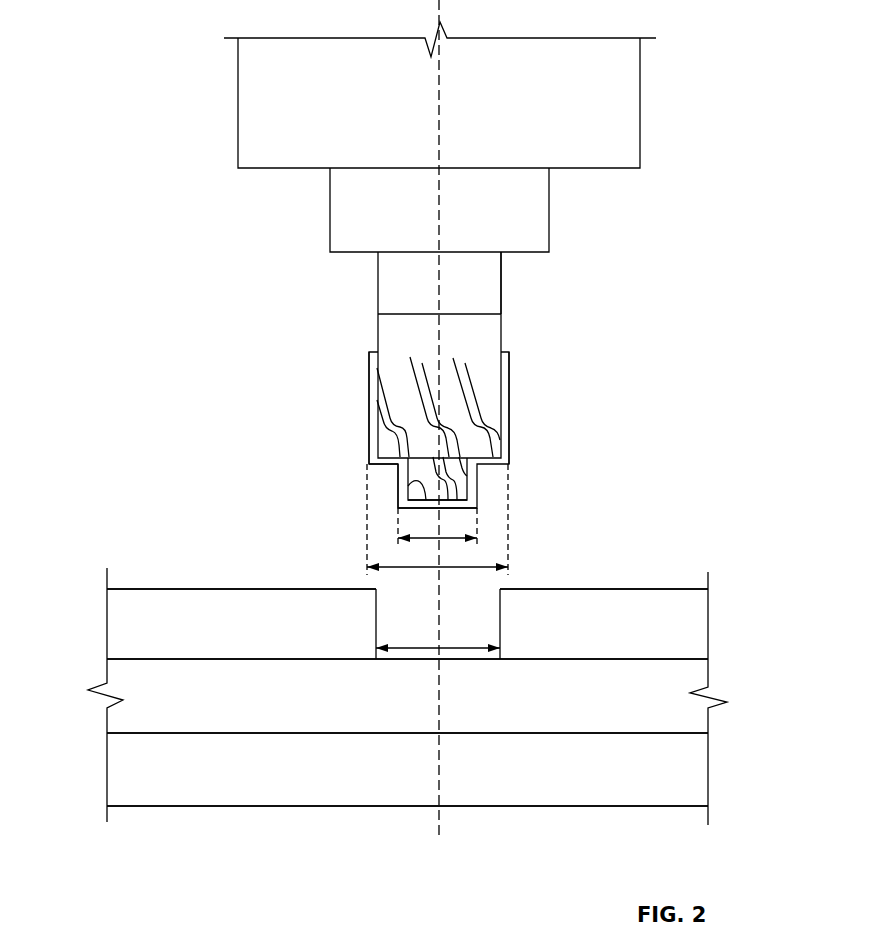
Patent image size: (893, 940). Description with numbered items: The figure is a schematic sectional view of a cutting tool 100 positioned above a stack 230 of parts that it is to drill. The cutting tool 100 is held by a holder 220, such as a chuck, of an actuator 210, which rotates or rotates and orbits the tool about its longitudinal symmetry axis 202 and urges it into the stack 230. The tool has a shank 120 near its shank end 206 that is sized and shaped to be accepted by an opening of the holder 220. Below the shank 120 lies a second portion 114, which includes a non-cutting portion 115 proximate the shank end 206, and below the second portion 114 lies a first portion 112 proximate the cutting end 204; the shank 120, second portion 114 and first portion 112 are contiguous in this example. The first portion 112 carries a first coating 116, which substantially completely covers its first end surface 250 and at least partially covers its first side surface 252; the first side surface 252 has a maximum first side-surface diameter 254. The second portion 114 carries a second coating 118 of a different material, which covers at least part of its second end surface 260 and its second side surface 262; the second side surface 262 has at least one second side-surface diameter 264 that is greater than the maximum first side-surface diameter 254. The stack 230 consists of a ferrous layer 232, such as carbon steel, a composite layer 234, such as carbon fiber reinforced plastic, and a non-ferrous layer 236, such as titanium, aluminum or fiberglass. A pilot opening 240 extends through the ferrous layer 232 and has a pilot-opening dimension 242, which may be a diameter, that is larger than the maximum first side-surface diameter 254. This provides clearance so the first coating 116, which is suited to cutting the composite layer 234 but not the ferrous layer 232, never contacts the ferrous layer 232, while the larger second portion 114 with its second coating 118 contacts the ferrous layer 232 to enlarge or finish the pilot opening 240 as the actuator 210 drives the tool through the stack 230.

The cutting tool 100 is at (353, 293).
The first portion 112 is at (468, 470).
The second portion 114 is at (512, 423).
The non-cutting portion 115 is at (377, 327).
The first coating 116 is at (478, 500).
The second coating 118 is at (510, 437).
The shank 120 is at (501, 296).
The longitudinal symmetry axis 202 is at (442, 2).
The cutting end 204 is at (590, 552).
The shank end 206 is at (488, 277).
The actuator 210 is at (640, 104).
The holder 220 is at (549, 202).
The stack 230 is at (413, 688).
The ferrous layer 232 is at (128, 630).
The composite layer 234 is at (128, 673).
The non-ferrous layer 236 is at (128, 772).
The pilot opening 240 is at (405, 619).
The pilot-opening dimension 242 is at (438, 633).
The first end surface 250 is at (407, 511).
The first side surface 252 is at (407, 497).
The maximum first side-surface diameter 254 is at (437, 528).
The second end surface 260 is at (374, 471).
The second side surface 262 is at (377, 392).
The second side-surface diameter 264 is at (437, 519).